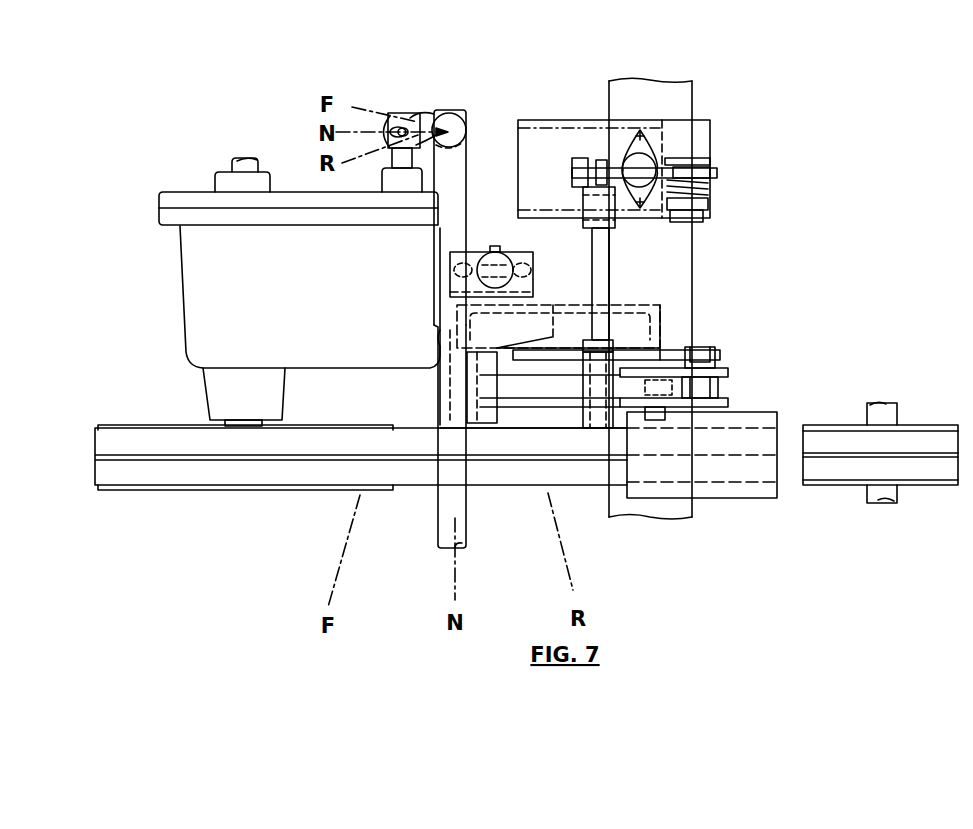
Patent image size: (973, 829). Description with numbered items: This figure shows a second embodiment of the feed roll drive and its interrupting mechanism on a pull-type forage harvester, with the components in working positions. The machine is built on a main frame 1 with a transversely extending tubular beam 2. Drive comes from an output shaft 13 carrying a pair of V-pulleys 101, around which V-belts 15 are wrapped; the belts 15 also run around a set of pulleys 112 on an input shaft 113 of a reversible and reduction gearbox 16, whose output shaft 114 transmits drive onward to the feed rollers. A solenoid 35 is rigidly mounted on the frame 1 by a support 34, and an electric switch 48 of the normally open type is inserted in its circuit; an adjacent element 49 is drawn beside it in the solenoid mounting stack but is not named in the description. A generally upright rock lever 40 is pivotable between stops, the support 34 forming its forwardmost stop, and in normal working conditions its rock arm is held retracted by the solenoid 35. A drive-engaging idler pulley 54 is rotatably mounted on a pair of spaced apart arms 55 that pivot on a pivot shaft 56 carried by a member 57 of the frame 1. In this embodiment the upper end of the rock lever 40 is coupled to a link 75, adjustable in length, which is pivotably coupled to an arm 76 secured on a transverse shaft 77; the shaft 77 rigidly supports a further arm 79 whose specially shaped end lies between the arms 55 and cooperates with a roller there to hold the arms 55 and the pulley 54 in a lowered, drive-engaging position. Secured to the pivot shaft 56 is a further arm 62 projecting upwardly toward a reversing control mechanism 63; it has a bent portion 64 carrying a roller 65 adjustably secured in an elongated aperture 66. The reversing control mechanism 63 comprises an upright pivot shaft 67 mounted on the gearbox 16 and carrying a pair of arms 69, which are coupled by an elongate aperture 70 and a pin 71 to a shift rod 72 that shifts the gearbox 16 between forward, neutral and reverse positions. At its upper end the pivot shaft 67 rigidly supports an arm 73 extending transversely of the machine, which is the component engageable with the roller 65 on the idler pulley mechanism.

The main frame 1 is at (604, 508).
The tubular beam 2 is at (692, 508).
The output shaft 13 is at (868, 495).
The V-belts 15 is at (547, 483).
The reversible and reduction gearbox 16 is at (182, 312).
The support 34 is at (557, 120).
The solenoid 35 is at (650, 160).
The rock lever 40 is at (712, 174).
The electric switch 48 is at (700, 215).
The washer 49 is at (662, 220).
The idler pulley 54 is at (778, 418).
The arms 55 is at (728, 372).
The pivot shaft 56 is at (495, 422).
The member 57 is at (452, 362).
The further arm 62 is at (501, 256).
The reversing control mechanism 63 is at (478, 64).
The bent portion 64 is at (535, 288).
The roller 65 is at (495, 246).
The elongated aperture 66 is at (530, 268).
The pivot shaft 67 is at (463, 125).
The arms 69 is at (401, 113).
The elongate aperture 70 is at (436, 122).
The pin 71 is at (414, 122).
The shift rod 72 is at (390, 166).
The arm 73 is at (467, 186).
The link 75 is at (690, 160).
The arm 76 is at (572, 172).
The transverse shaft 77 is at (610, 270).
The further arm 79 is at (647, 380).
The V-pulleys 101 is at (945, 488).
The pulleys 112 is at (268, 488).
The input shaft 113 is at (265, 423).
The output shaft 114 is at (230, 160).